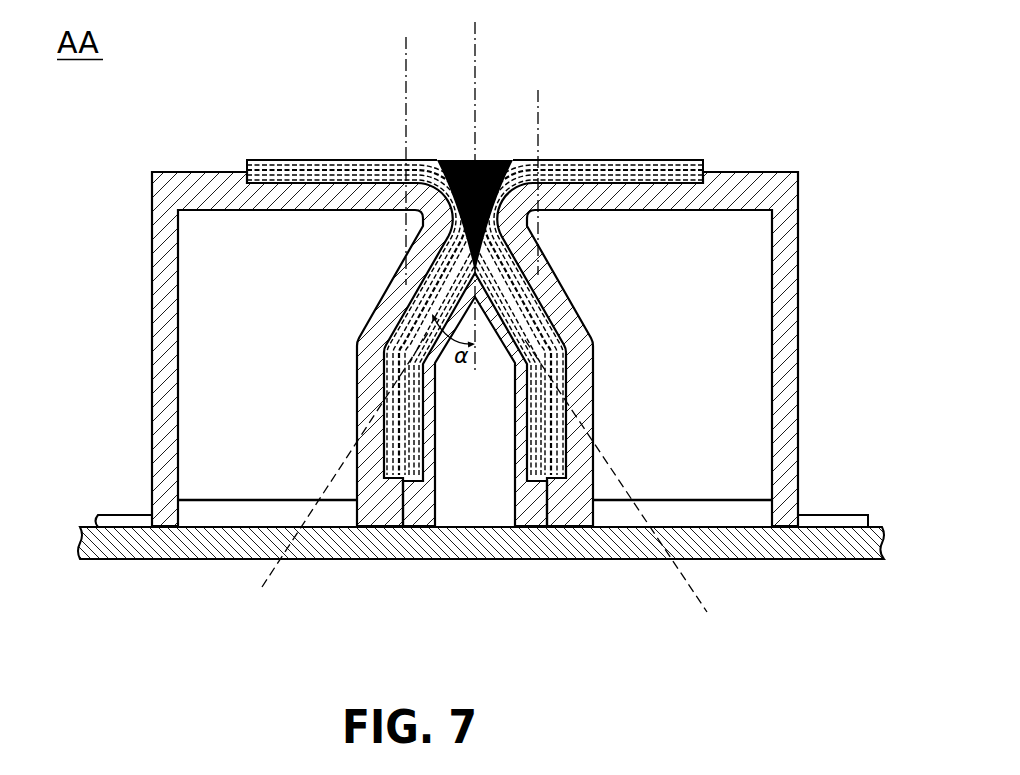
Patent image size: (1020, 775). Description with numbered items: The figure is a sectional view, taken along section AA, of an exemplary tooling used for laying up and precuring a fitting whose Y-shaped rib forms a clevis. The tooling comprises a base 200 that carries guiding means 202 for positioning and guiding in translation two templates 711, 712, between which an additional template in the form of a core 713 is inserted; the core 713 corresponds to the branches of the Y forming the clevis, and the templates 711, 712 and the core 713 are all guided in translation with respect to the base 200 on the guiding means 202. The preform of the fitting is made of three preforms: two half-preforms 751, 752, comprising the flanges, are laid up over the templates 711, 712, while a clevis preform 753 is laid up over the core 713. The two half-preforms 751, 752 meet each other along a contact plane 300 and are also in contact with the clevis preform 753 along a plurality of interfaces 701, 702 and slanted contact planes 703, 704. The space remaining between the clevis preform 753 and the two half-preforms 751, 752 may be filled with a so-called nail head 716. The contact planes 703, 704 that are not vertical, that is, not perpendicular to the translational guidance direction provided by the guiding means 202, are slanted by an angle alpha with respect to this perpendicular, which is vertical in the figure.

The base 200 is at (204, 562).
The guiding means 202 is at (115, 514).
The contact plane 300 is at (476, 47).
The interface 701 is at (541, 127).
The interface 702 is at (405, 78).
The slanted contact plane 703 is at (268, 580).
The slanted contact plane 704 is at (699, 598).
The template 711 is at (797, 350).
The template 712 is at (150, 350).
The core 713 is at (403, 484).
The nail head 716 is at (480, 261).
The half-preform 751 is at (616, 162).
The half-preform 752 is at (331, 162).
The clevis preform 753 is at (529, 480).